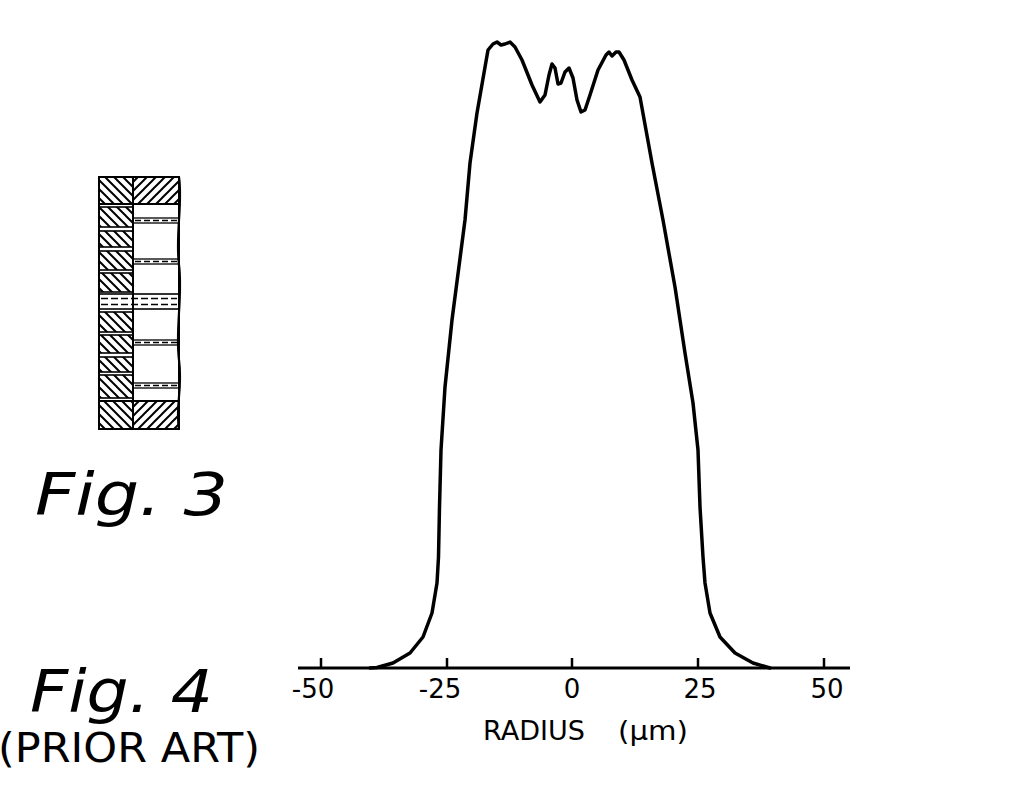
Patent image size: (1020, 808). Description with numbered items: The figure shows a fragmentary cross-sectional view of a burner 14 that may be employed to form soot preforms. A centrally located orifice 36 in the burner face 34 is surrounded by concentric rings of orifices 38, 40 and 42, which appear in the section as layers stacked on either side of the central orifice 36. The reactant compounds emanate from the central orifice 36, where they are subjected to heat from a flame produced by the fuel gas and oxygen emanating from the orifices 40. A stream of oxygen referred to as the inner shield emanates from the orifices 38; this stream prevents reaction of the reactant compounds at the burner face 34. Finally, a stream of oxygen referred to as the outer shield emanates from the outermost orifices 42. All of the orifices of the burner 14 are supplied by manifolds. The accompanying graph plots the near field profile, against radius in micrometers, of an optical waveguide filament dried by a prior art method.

The burner 14 is at (156, 178).
The burner face 34 is at (99, 181).
The orifice 36 is at (99, 302).
The orifices 38 is at (99, 268).
The orifices 40 is at (99, 245).
The orifices 42 is at (99, 209).